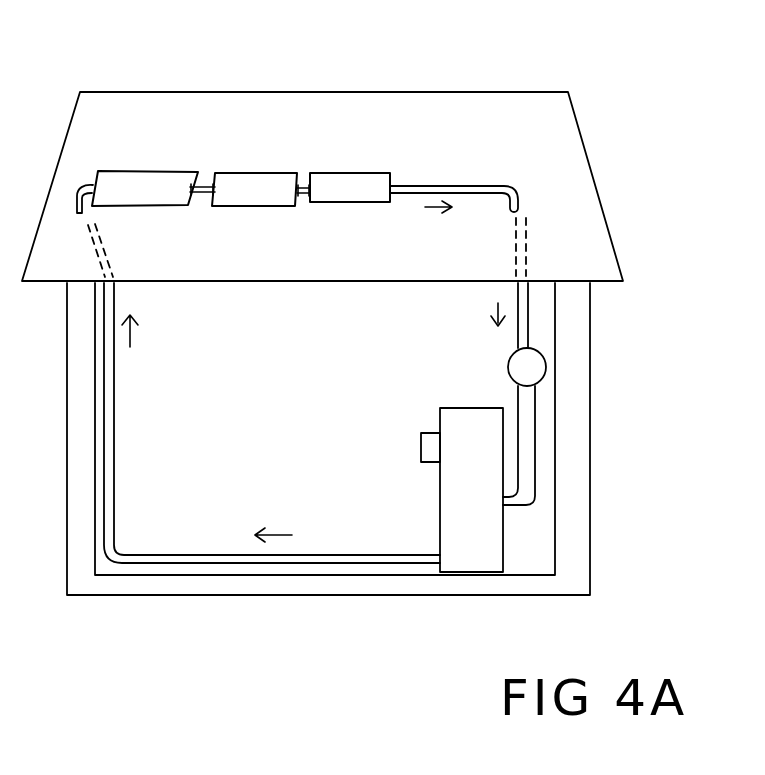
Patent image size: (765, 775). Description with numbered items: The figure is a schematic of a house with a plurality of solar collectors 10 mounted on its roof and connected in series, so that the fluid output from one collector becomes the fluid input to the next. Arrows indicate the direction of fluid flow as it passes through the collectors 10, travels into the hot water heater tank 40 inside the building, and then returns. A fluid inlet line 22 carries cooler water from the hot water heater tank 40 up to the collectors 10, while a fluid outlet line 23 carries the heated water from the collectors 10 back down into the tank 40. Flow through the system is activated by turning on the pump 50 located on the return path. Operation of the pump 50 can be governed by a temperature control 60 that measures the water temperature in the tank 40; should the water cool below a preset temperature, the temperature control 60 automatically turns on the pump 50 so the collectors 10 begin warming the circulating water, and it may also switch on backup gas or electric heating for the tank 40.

The solar collector 10 is at (148, 183).
The fluid inlet line 22 is at (116, 410).
The fluid outlet line 23 is at (526, 315).
The hot water heater tank 40 is at (453, 505).
The pump 50 is at (533, 365).
The temperature control 60 is at (418, 447).